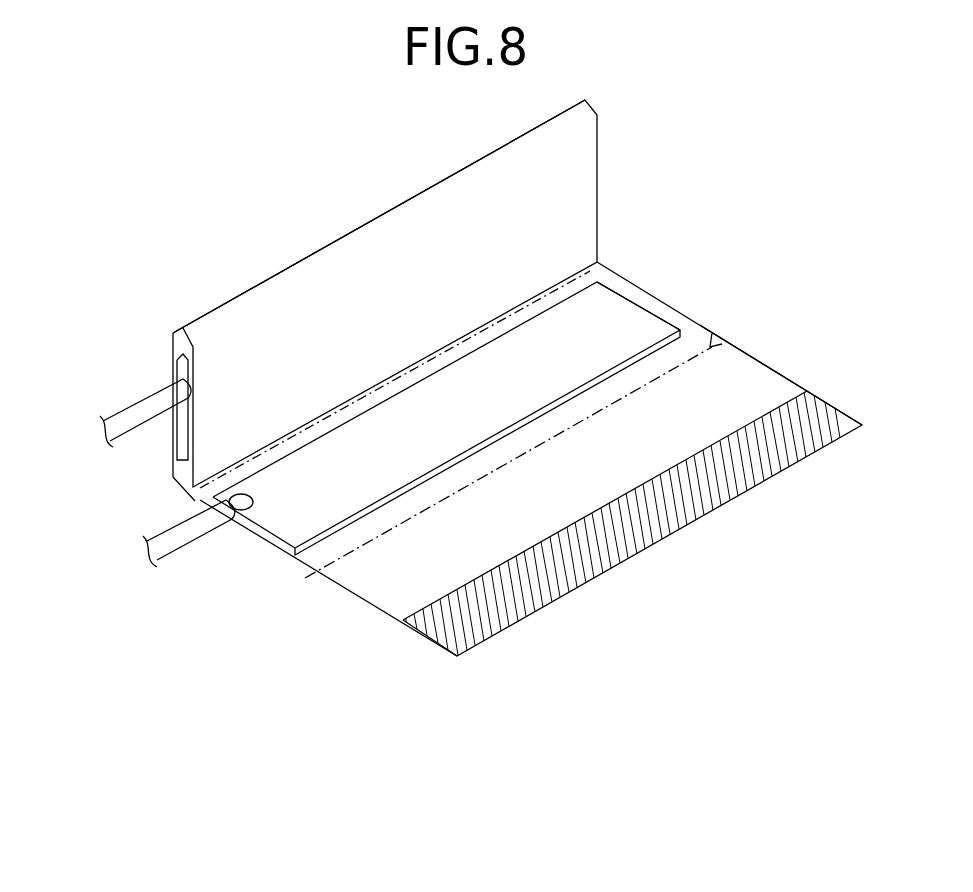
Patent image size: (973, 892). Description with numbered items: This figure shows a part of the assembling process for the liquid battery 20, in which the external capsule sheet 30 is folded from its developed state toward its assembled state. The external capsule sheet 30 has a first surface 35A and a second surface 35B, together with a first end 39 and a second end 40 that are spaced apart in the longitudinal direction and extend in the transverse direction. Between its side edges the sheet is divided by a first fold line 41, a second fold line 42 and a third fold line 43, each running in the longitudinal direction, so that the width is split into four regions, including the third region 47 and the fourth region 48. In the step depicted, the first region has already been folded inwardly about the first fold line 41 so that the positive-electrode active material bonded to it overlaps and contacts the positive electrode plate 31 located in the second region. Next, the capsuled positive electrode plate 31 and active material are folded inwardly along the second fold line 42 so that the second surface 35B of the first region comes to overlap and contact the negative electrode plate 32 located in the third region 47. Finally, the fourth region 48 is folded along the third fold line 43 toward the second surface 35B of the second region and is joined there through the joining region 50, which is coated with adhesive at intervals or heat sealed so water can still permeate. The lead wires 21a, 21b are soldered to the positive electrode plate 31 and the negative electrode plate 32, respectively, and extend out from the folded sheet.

The liquid battery 20 is at (873, 236).
The lead wire 21a is at (132, 420).
The lead wire 21b is at (175, 540).
The external capsule sheet 30 is at (585, 153).
The positive electrode plate 31 is at (185, 371).
The negative electrode plate 32 is at (612, 310).
The first surface 35A is at (780, 395).
The second surface 35B is at (500, 173).
The first end 39 is at (783, 372).
The second end 40 is at (353, 597).
The first fold line 41 is at (237, 297).
The second fold line 42 is at (192, 503).
The third fold line 43 is at (717, 328).
The third region 47 is at (660, 312).
The fourth region 48 is at (743, 373).
The joining region 50 is at (698, 493).